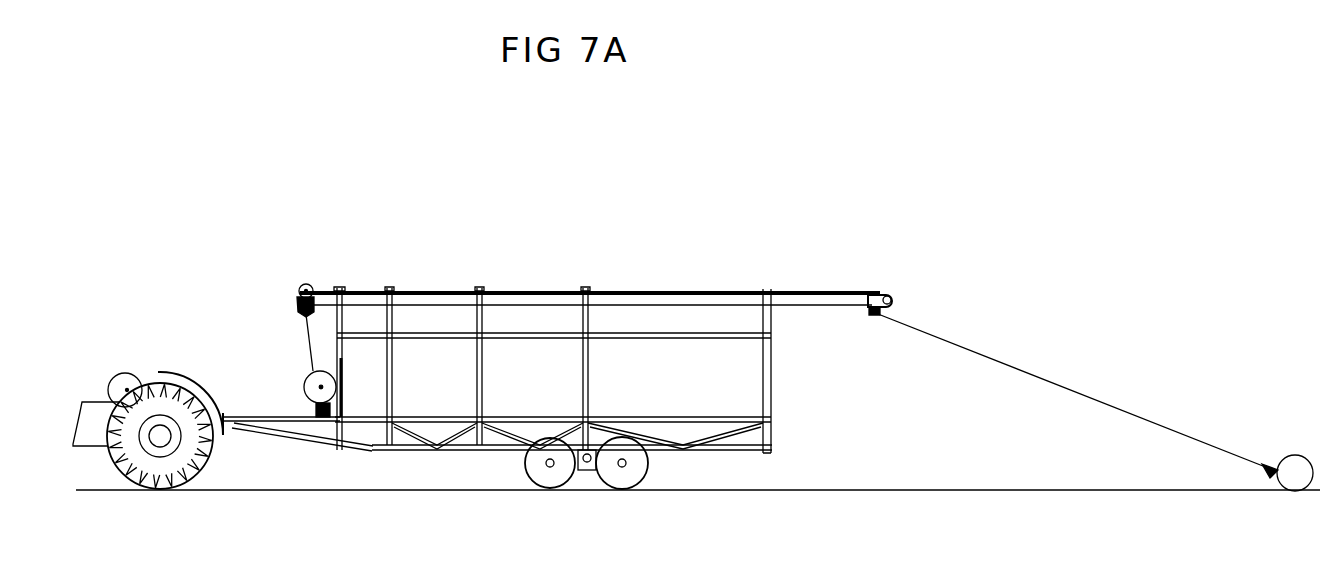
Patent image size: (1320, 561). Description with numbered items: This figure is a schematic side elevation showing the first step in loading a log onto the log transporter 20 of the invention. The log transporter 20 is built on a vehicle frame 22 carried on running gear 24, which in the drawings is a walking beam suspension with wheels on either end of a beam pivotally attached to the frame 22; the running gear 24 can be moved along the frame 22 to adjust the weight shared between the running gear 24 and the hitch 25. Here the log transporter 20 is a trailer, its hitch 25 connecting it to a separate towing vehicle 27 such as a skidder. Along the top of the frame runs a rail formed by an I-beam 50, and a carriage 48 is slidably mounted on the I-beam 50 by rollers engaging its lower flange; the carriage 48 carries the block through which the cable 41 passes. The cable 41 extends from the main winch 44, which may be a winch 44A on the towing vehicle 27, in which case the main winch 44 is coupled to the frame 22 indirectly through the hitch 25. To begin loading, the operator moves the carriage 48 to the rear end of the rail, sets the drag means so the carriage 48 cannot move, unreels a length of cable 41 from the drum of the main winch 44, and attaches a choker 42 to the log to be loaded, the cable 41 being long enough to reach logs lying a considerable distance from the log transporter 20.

The log transporter 20 is at (536, 280).
The vehicle frame 22 is at (371, 452).
The running gear 24 is at (599, 488).
The hitch 25 is at (229, 433).
The towing vehicle 27 is at (173, 360).
The cable 41 is at (318, 408).
The choker 42 is at (1266, 468).
The main winch 44 is at (311, 376).
The winch 44A is at (128, 380).
The carriage 48 is at (874, 293).
The I-beam 50 is at (703, 298).